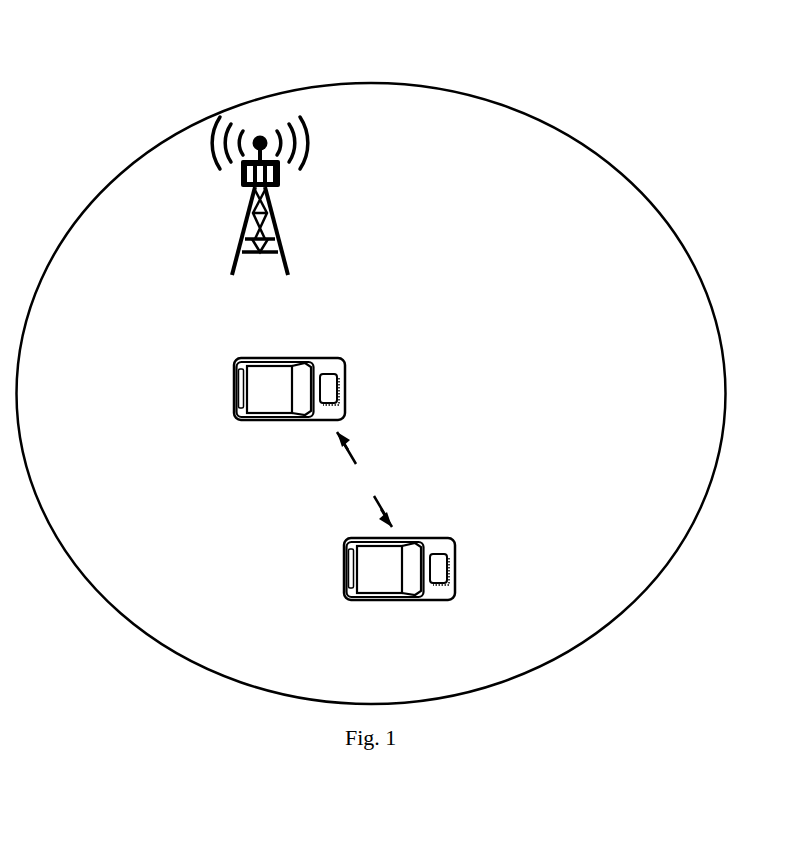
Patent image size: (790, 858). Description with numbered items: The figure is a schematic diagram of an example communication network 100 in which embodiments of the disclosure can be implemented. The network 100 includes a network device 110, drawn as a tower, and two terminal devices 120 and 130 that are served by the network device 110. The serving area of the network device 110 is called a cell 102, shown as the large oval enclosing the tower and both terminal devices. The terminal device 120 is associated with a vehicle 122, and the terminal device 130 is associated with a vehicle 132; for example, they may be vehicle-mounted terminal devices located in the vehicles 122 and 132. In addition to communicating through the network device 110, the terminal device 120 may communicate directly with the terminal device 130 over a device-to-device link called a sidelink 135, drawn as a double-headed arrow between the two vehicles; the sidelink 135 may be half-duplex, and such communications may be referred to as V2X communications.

The communication network 100 is at (122, 52).
The cell 102 is at (502, 102).
The network device 110 is at (272, 212).
The terminal device 120 is at (337, 390).
The vehicle 122 is at (328, 375).
The terminal device 130 is at (447, 567).
The vehicle 132 is at (435, 554).
The sidelink 135 is at (364, 479).